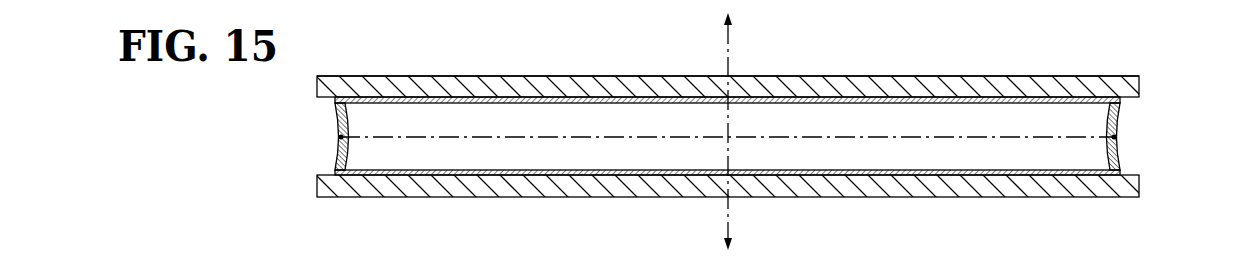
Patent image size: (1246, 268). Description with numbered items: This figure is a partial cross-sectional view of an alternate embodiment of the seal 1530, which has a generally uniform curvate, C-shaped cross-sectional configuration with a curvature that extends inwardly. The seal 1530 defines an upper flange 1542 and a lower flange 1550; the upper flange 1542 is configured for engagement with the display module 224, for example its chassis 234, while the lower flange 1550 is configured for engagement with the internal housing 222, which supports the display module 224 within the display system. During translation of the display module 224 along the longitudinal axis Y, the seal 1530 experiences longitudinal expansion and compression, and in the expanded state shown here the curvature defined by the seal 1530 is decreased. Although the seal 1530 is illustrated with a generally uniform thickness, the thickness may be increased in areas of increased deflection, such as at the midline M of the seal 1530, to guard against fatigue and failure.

The internal housing 222 is at (957, 197).
The display module 224 is at (915, 73).
The chassis 234 is at (992, 76).
The seal 1530 is at (556, 127).
The upper flange 1542 is at (385, 97).
The lower flange 1550 is at (397, 173).
The midline M is at (1116, 137).
The longitudinal axis Y is at (728, 42).